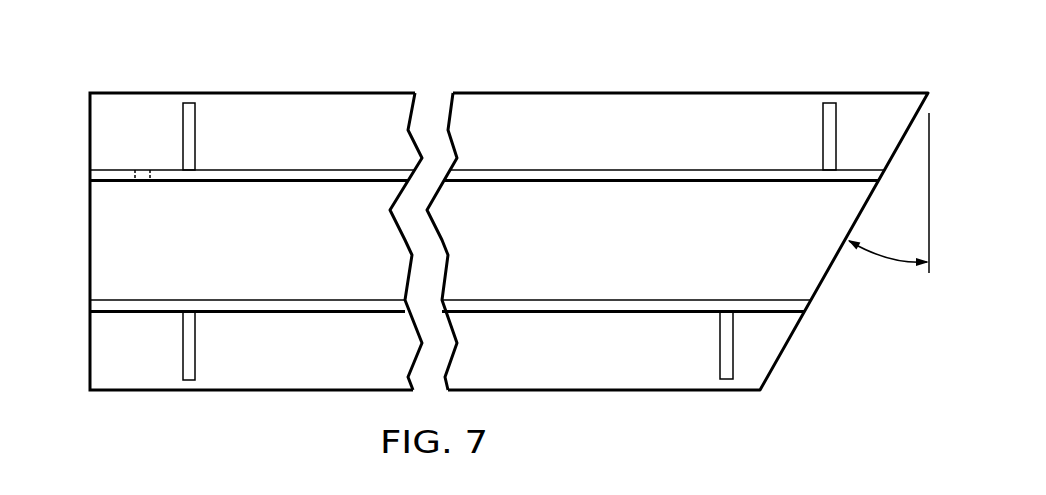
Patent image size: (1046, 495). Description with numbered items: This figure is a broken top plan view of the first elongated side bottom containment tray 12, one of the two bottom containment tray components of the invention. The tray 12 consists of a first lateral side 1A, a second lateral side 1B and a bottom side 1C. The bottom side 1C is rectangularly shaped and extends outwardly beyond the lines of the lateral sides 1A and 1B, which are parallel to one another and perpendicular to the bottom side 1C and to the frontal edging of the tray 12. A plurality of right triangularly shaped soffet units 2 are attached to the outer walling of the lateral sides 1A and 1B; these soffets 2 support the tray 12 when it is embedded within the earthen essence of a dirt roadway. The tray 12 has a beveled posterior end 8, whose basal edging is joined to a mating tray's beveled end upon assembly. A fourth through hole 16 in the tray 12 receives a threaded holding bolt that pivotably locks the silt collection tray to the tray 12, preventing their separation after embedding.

The first elongated side bottom containment tray 12 is at (552, 92).
The second lateral side 1B is at (261, 176).
The first lateral side 1A is at (138, 303).
The bottom side 1C is at (108, 227).
The soffet units 2 is at (194, 128).
The fourth through hole 16 is at (133, 178).
The beveled posterior end 8 is at (783, 347).